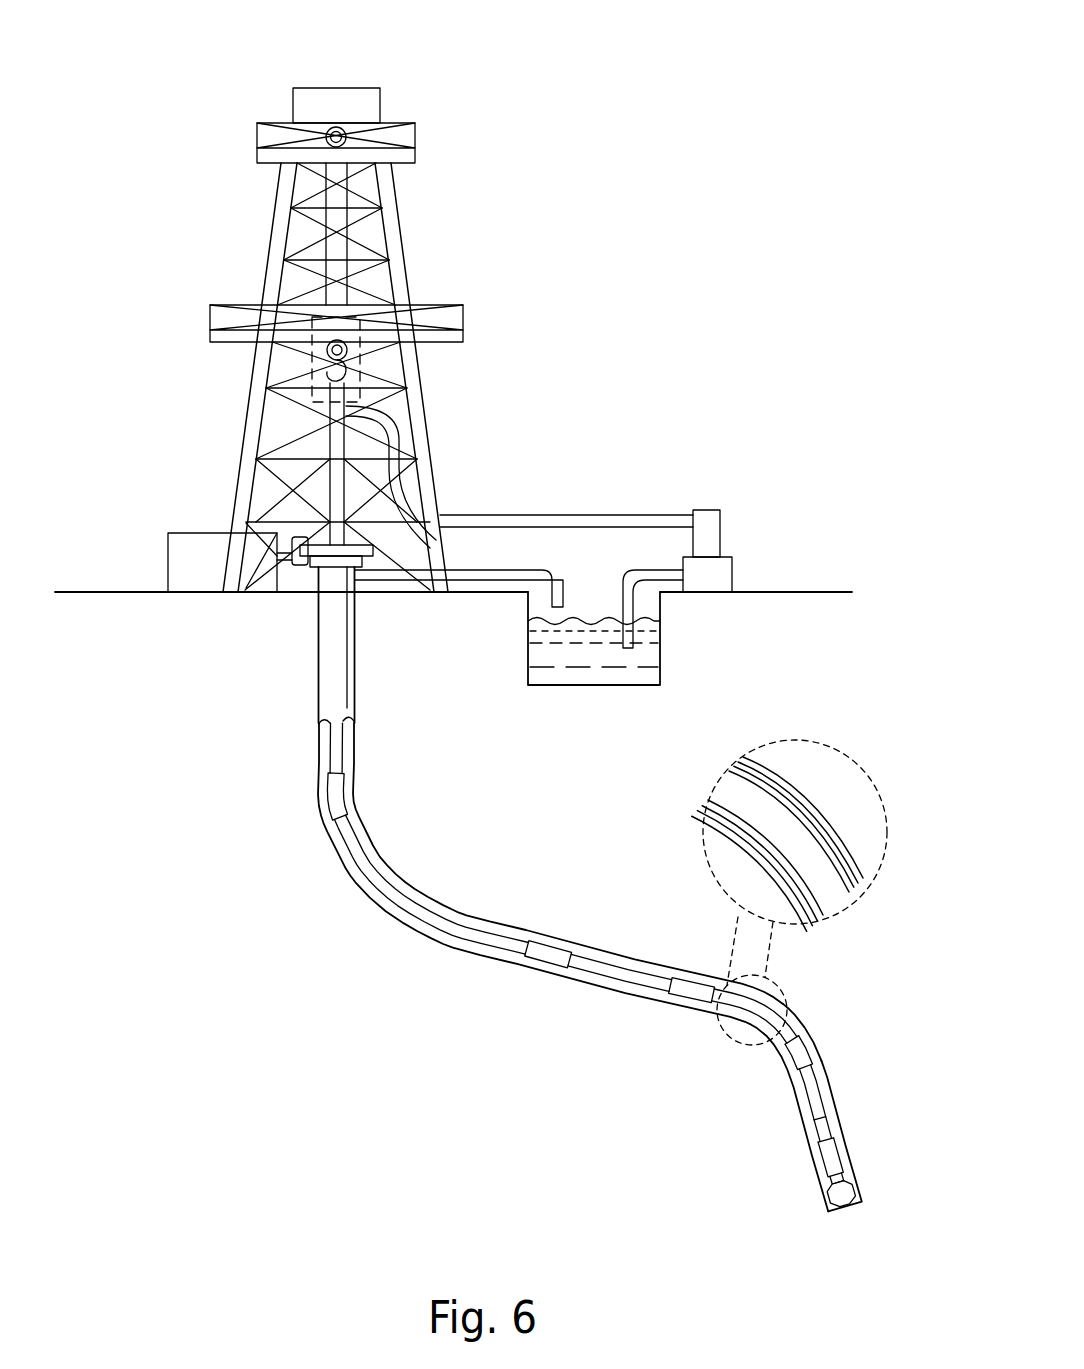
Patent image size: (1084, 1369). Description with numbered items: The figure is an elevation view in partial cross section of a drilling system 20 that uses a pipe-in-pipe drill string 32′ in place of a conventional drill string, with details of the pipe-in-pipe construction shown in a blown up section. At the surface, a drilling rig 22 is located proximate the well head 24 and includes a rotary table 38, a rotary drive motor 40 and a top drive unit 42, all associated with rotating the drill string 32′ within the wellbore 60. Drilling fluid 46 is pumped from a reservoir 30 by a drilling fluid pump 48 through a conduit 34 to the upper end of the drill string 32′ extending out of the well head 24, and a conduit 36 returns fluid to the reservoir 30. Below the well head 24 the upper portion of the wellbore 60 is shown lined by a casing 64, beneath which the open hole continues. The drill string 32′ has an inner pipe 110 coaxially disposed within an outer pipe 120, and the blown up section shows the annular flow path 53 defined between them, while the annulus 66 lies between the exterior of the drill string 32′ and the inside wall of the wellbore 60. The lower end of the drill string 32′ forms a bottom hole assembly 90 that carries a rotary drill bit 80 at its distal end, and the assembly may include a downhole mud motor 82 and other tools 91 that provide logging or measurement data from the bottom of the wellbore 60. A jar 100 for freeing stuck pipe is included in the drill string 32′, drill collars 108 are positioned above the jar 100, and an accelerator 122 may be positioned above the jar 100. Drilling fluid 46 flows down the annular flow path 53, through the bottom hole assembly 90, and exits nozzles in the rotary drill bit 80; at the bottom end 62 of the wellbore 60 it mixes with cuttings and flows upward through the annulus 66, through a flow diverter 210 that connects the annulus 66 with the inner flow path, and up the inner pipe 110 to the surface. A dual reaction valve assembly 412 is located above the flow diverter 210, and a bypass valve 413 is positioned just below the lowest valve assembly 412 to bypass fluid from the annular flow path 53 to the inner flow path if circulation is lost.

The drilling system 20 is at (198, 52).
The drilling rig 22 is at (268, 249).
The well head 24 is at (307, 571).
The reservoir 30 is at (557, 687).
The pipe-in-pipe drill string 32′ is at (370, 900).
The conduit 34 is at (648, 515).
The conduit 36 is at (557, 570).
The rotary table 38 is at (375, 549).
The rotary drive motor 40 is at (168, 562).
The top drive unit 42 is at (312, 365).
The drilling fluid 46 is at (628, 677).
The drilling fluid pump 48 is at (722, 533).
The annular flow path 53 is at (712, 803).
The wellbore 60 is at (433, 885).
The bottom end of wellbore 62 is at (830, 1203).
The casing 64 is at (318, 710).
The annulus 66 is at (325, 753).
The rotary drill bit 80 is at (853, 1197).
The downhole mud motor 82 is at (843, 1158).
The bottom hole assembly 90 is at (777, 1082).
The tools 91 is at (838, 1143).
The jar 100 is at (565, 963).
The drill collar 108 is at (802, 1034).
The inner pipe 110 is at (765, 835).
The outer pipe 120 is at (752, 835).
The accelerator 122 is at (343, 790).
The flow diverter 210 is at (814, 1060).
The dual reaction valve assembly 412 is at (527, 952).
The bypass valve 413 is at (778, 1073).